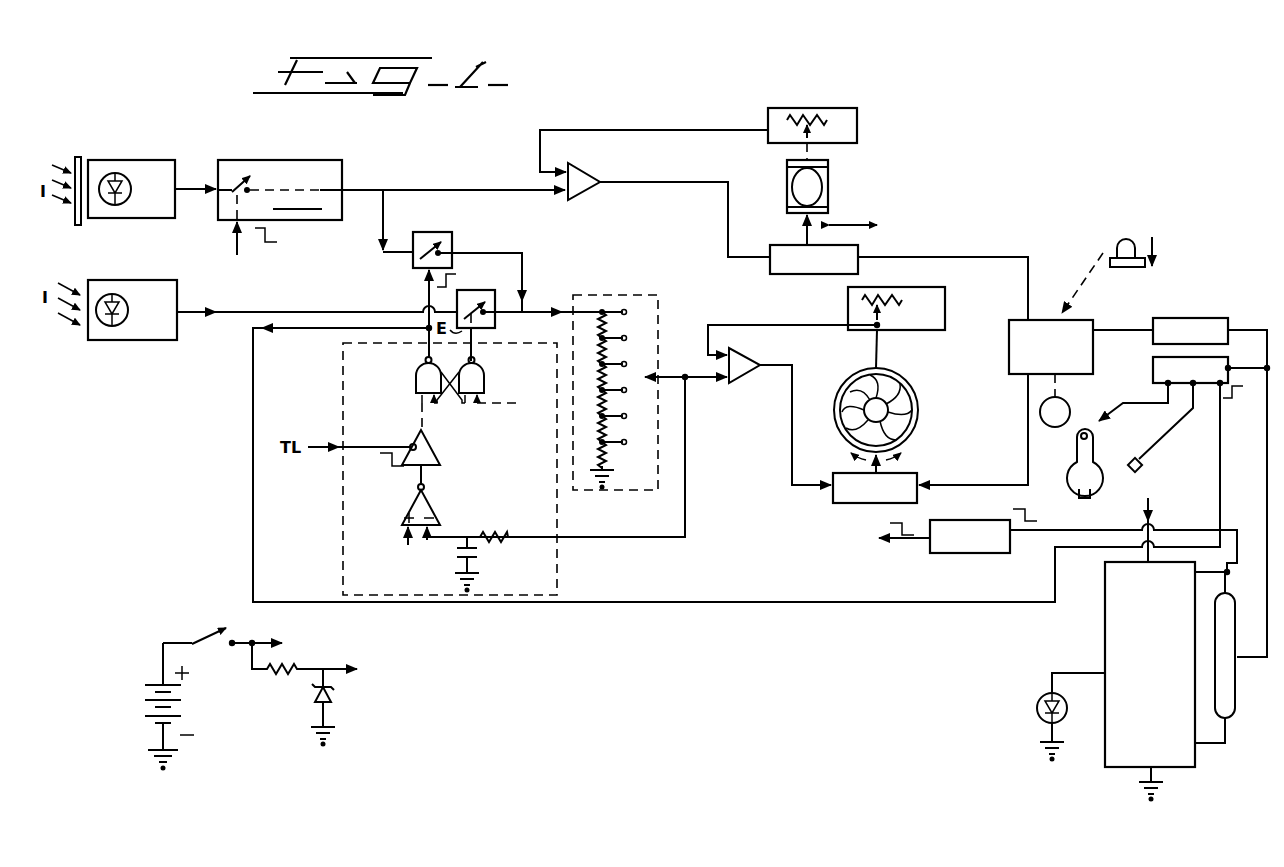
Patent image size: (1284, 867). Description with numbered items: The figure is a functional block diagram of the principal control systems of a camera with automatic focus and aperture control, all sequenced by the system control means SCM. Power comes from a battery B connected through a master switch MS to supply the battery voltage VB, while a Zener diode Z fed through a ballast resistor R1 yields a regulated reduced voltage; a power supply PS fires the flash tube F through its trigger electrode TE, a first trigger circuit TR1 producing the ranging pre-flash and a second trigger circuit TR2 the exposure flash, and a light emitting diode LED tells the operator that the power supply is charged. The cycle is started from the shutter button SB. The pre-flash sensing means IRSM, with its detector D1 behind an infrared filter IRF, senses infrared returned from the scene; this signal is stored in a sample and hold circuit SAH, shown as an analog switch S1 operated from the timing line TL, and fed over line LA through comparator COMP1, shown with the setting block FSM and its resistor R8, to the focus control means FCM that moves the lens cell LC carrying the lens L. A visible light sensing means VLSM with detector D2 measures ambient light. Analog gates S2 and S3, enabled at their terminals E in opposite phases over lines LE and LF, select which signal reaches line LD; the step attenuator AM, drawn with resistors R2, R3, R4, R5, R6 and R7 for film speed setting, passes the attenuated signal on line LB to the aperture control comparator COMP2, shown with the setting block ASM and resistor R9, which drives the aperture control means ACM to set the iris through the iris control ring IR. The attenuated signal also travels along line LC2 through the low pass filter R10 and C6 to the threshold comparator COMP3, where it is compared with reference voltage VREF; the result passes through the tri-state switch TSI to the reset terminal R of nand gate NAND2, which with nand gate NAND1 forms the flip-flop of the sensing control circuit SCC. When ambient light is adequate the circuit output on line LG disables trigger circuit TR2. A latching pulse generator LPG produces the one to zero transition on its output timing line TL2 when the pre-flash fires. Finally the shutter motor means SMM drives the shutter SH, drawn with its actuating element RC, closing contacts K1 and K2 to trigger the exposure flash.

The infrared sensing module IRSM is at (143, 169).
The infrared filter IRF is at (77, 157).
The photodiode D1 is at (128, 195).
The sample and hold circuit SAH is at (280, 190).
The analog switch S1 is at (280, 194).
The timing line TL is at (257, 248).
The line LA is at (474, 188).
The analog gate S2 is at (440, 232).
The analog gate S3 is at (480, 285).
The enabling terminal E is at (425, 266).
The line LE is at (427, 296).
The line LF is at (482, 340).
The line LD is at (546, 305).
The line LG is at (298, 348).
The comparator COMP1 is at (588, 172).
The focus setting module FSM is at (822, 118).
The potentiometer R8 is at (836, 95).
The image focussing lens L is at (824, 185).
The lens cell LC is at (832, 207).
The focus control means FCM is at (899, 365).
The shutter button SB is at (1136, 243).
The system control means SCM is at (1081, 347).
The first trigger circuit TR1 is at (1210, 487).
The second trigger circuit TR2 is at (1210, 381).
The release coil RC is at (1118, 408).
The switch contact K2 is at (1141, 470).
The shutter motor means SMM is at (1040, 412).
The switch contact K1 is at (1078, 497).
The shutter SH is at (1100, 455).
The aperture setting module ASM is at (910, 296).
The potentiometer R9 is at (930, 280).
The aperture control comparator COMP2 is at (745, 352).
The line LB is at (694, 375).
The line LC LC2 is at (686, 462).
The iris control ring IR is at (905, 386).
The aperture control means ACM is at (875, 488).
The latching pulse generator LPG is at (1058, 540).
The timing line TL2 is at (900, 541).
The battery voltage VB is at (1163, 523).
The power supply PS is at (1167, 682).
The trigger electrode TE is at (1237, 657).
The flash tube F is at (1236, 700).
The light emitting diode LED is at (1037, 708).
The master switch MS is at (242, 629).
The battery B is at (183, 702).
The ballast resistor R1 is at (270, 674).
The Zener diode Z is at (334, 698).
The visible light sensing means VLSM is at (132, 296).
The photodiode D2 is at (125, 316).
The sensing control circuit SCC is at (560, 548).
The nand gate NAND1 is at (503, 378).
The nand gate NAND2 is at (412, 378).
The reset terminal R is at (416, 396).
The tri-state switch TSI is at (436, 447).
The threshold illumination comparator COMP3 is at (436, 505).
The reference voltage VREF is at (403, 562).
The low pass filter resistor R10 is at (495, 524).
The low pass filter capacitor C6 is at (484, 565).
The step attenuator means AM is at (615, 377).
The resistor R2 is at (617, 325).
The resistor R3 is at (620, 351).
The resistor R4 is at (617, 377).
The resistor R5 is at (617, 403).
The resistor R6 is at (617, 429).
The resistor R7 is at (618, 455).